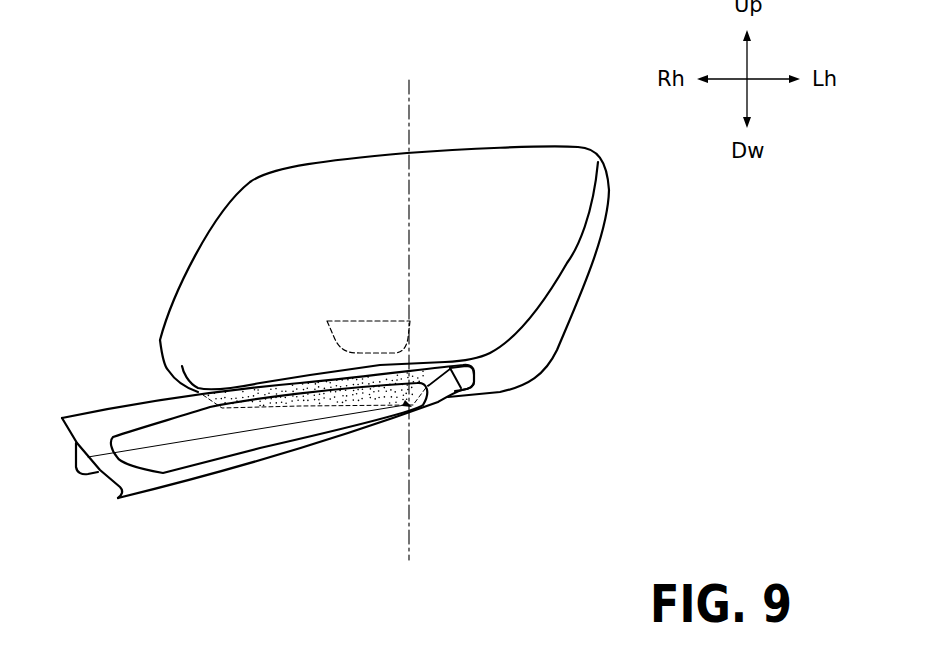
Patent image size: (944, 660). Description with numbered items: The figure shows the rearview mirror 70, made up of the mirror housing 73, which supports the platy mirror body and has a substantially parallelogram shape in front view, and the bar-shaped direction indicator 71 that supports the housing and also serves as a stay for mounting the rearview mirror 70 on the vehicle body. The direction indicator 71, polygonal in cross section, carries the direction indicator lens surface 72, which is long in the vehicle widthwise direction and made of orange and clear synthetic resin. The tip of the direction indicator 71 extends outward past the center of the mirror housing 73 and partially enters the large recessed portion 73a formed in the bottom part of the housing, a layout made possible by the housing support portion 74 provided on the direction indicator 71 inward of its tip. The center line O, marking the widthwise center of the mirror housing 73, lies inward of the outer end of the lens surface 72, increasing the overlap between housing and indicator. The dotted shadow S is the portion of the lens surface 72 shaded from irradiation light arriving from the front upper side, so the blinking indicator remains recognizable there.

The rearview mirror 70 is at (528, 107).
The direction indicator 71 is at (120, 413).
The direction indicator lens surface 72 is at (205, 449).
The mirror housing 73 is at (530, 302).
The recessed portion 73a is at (458, 380).
The housing support portion 74 is at (350, 320).
The shadow S is at (316, 406).
The center line O is at (409, 93).